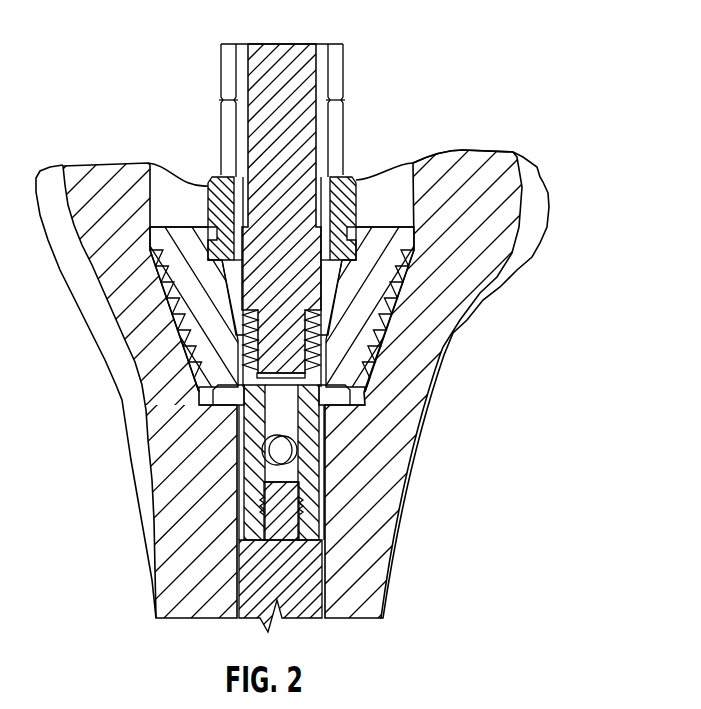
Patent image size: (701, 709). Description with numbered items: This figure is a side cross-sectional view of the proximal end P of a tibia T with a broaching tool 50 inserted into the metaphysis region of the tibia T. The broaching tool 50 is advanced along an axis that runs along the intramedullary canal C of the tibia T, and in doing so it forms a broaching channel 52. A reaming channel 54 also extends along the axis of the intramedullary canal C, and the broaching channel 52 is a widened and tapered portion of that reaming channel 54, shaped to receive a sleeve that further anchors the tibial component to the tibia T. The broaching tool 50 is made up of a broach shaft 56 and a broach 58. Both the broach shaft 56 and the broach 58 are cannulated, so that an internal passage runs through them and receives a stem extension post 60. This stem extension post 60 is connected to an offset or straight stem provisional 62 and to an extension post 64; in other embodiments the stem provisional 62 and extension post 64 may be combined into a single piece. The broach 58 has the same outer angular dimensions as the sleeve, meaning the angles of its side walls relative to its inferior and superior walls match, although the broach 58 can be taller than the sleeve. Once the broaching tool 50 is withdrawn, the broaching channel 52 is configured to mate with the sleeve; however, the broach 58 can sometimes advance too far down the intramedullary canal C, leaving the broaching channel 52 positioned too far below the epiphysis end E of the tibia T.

The broaching tool 50 is at (350, 354).
The broaching channel 52 is at (380, 327).
The reaming channel 54 is at (240, 553).
The broach shaft 56 is at (230, 113).
The broach 58 is at (203, 273).
The stem extension post 60 is at (300, 50).
The stem provisional 62 is at (317, 480).
The extension post 64 is at (297, 553).
The intramedullary canal C is at (375, 183).
The epiphysis end E is at (471, 149).
The proximal end P is at (551, 192).
The tibia T is at (130, 403).